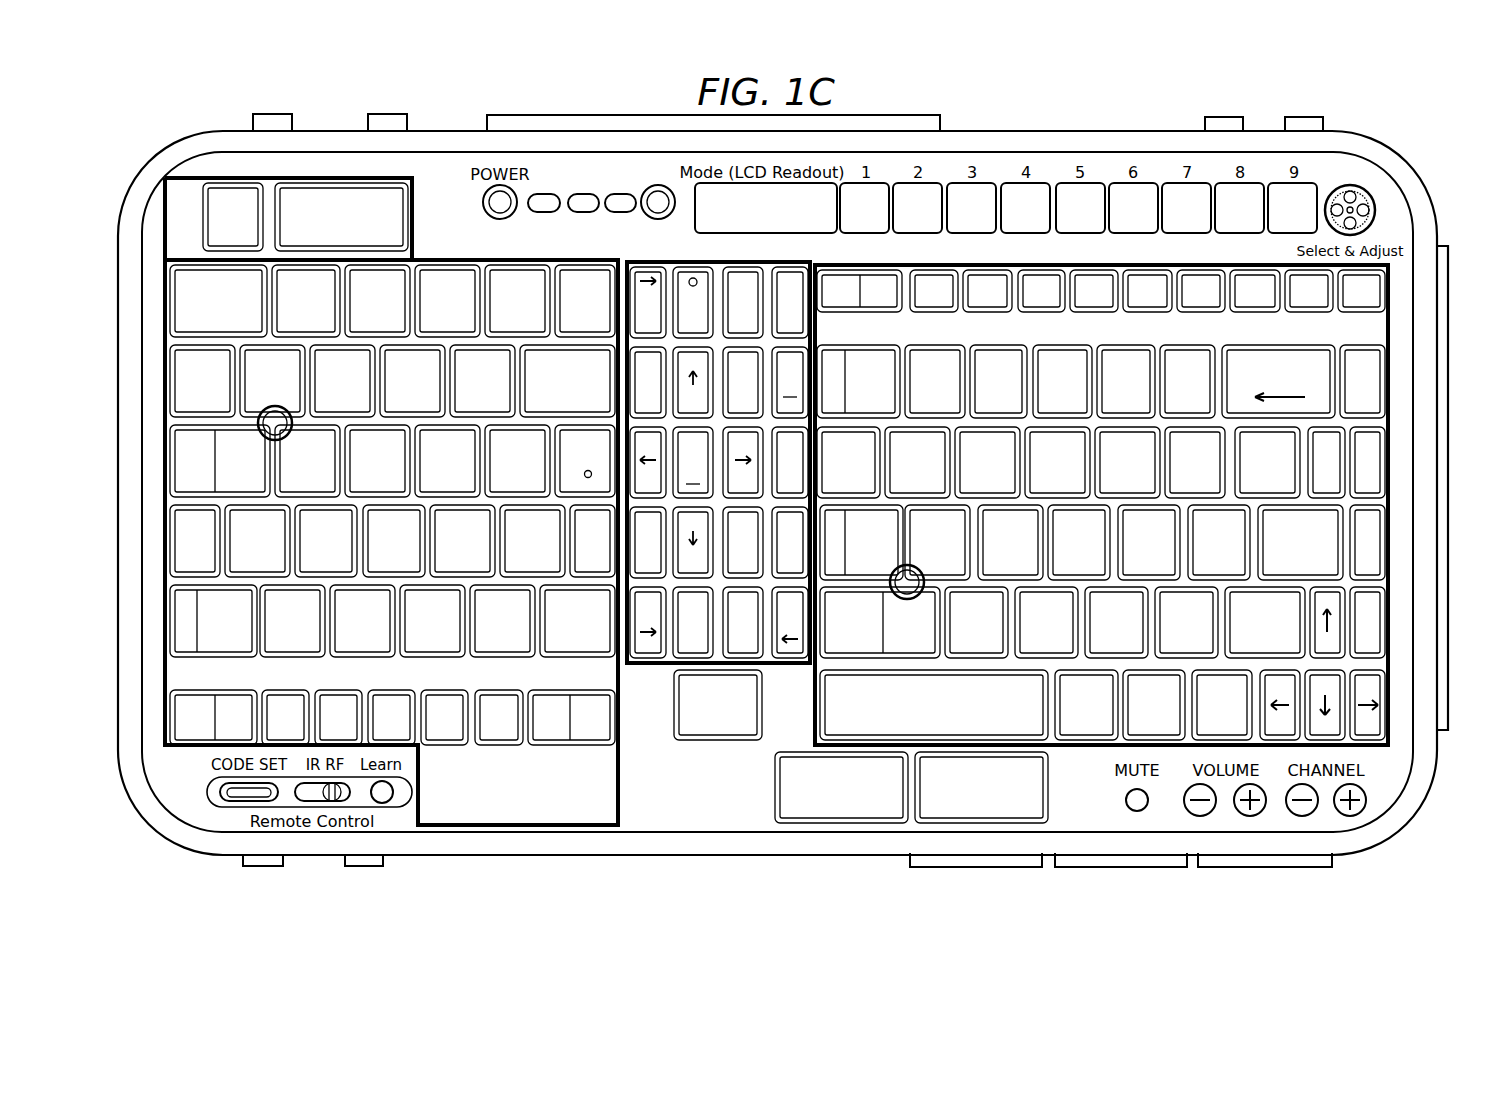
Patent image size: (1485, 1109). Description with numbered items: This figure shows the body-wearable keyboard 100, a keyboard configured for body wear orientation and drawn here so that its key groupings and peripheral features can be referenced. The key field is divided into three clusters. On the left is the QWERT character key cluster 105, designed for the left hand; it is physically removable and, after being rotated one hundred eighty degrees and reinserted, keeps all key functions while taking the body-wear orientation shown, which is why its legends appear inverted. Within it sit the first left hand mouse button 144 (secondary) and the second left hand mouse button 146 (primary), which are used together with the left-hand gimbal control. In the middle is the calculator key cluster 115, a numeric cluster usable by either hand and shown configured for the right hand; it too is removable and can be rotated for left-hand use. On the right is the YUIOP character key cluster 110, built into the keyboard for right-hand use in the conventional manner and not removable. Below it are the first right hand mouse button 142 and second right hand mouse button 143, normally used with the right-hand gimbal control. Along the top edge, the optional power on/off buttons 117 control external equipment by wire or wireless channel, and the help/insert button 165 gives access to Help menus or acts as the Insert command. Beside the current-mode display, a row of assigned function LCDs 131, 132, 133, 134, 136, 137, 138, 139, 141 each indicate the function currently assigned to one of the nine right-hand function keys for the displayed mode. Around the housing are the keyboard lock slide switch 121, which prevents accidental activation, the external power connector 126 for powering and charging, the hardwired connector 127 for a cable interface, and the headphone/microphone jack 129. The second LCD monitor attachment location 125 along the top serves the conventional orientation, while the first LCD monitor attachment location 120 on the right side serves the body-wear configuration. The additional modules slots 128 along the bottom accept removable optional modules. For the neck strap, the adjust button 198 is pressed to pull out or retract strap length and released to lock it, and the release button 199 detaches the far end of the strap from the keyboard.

The body-wearable keyboard 100 is at (176, 112).
The adjust button 198 is at (270, 114).
The keyboard lock slide switch 121 is at (388, 114).
The second LCD monitor attachment location 125 is at (525, 115).
The external power connector 126 is at (1224, 117).
The hardwired connector 127 is at (1304, 117).
The QWERT character key cluster 105 is at (321, 219).
The second left hand mouse button (primary) 146 is at (215, 230).
The first left hand mouse button (secondary) 144 is at (323, 230).
The optional power on/off buttons 117 is at (527, 192).
The help/insert button 165 is at (640, 214).
The F8 assigned function LCD 131 is at (847, 221).
The F9 assigned function LCD 132 is at (900, 221).
The F10 assigned function LCD 133 is at (954, 221).
The F11 assigned function LCD 134 is at (1008, 221).
The F12 assigned function LCD 136 is at (1063, 221).
The F13 assigned function LCD 137 is at (1116, 221).
The F14 assigned function LCD 138 is at (1169, 221).
The F15 assigned function LCD 139 is at (1222, 221).
The F16 assigned function LCD 141 is at (1275, 221).
The calculator key cluster 115 is at (776, 663).
The YUIOP character key cluster 110 is at (1065, 748).
The first right hand mouse button 142 is at (823, 801).
The second right hand mouse button 143 is at (963, 801).
The first LCD monitor attachment location 120 is at (1440, 732).
The additional modules slots 128 is at (906, 876).
The release button 199 is at (262, 868).
The headphone/microphone jack 129 is at (368, 868).